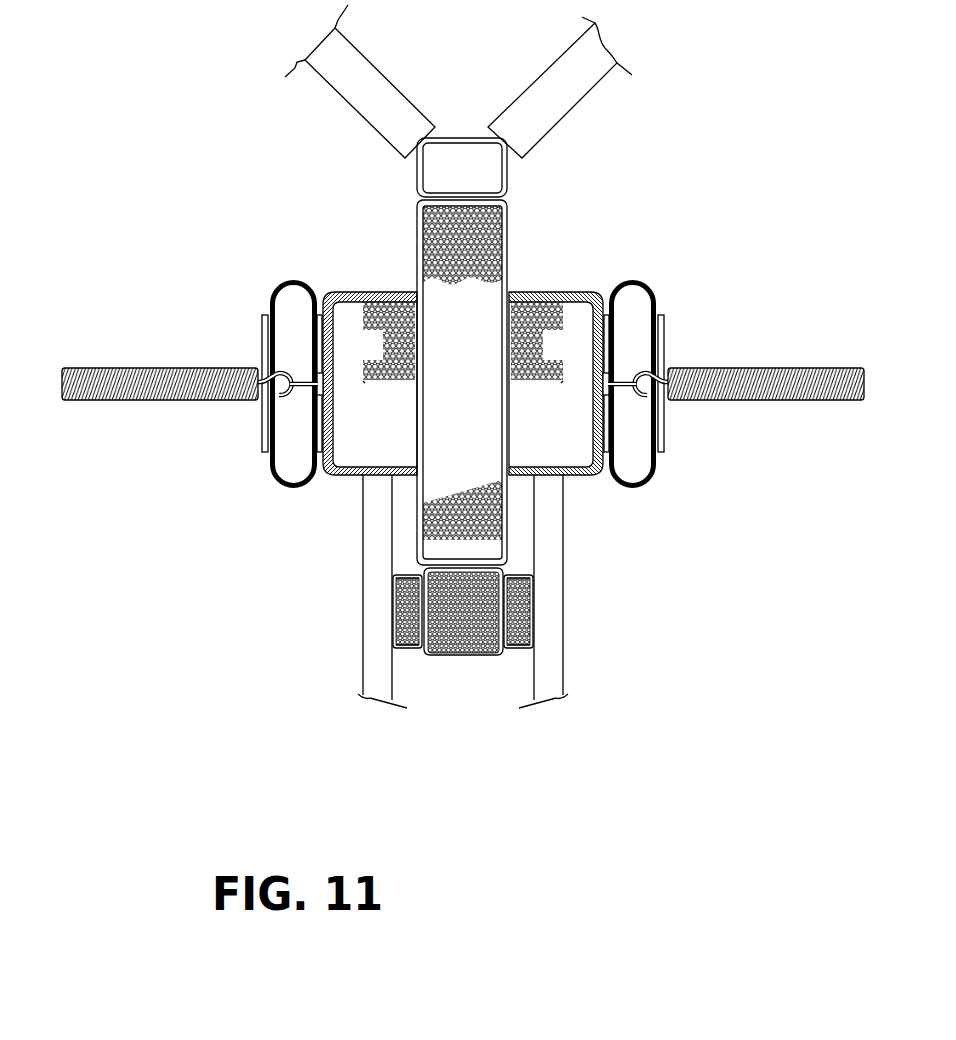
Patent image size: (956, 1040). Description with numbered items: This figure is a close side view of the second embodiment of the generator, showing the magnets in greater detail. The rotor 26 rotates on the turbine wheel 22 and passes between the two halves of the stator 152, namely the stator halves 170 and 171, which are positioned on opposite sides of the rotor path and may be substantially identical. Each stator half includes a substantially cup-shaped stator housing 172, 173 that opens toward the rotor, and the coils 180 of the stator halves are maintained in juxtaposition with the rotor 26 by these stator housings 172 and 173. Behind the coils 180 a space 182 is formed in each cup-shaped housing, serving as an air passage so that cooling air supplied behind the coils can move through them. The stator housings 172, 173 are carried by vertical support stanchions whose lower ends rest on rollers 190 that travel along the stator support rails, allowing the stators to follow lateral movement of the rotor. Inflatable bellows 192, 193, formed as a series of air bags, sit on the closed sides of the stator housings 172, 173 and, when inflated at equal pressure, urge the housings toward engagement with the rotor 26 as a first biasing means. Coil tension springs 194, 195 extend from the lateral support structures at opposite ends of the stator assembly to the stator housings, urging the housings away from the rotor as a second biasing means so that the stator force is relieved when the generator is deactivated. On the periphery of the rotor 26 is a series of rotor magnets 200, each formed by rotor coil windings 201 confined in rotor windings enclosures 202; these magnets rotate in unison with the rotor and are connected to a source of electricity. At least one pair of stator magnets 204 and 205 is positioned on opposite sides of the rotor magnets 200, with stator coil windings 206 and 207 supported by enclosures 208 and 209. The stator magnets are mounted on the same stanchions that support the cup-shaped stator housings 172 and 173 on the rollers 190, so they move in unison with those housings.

The turbine wheel 22 is at (598, 110).
The rotor 26 is at (510, 235).
The stator 152 is at (456, 334).
The stator half 170 is at (405, 290).
The stator half 171 is at (550, 290).
The stator housing 172 is at (350, 477).
The stator housing 173 is at (577, 477).
The coils 180 is at (405, 383).
The space 182 is at (378, 358).
The rollers 190 is at (372, 570).
The inflatable bellows 192 is at (288, 280).
The inflatable bellows 193 is at (638, 280).
The coil tension spring 194 is at (128, 380).
The coil tension spring 195 is at (798, 382).
The rotor magnets 200 is at (468, 657).
The rotor coil windings 201 is at (492, 648).
The rotor windings enclosures 202 is at (442, 657).
The stator magnet 204 is at (342, 605).
The stator magnet 205 is at (584, 605).
The stator coil windings 206 is at (395, 597).
The stator coil windings 207 is at (533, 597).
The enclosure 208 is at (392, 617).
The enclosure 209 is at (533, 642).